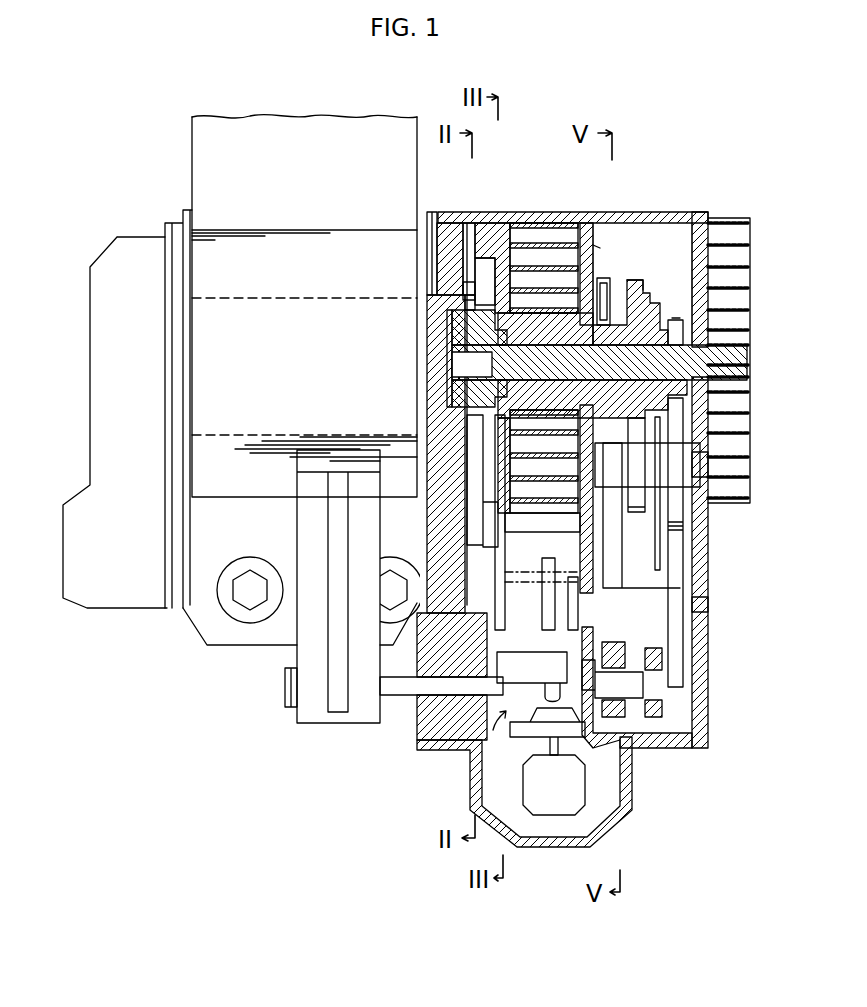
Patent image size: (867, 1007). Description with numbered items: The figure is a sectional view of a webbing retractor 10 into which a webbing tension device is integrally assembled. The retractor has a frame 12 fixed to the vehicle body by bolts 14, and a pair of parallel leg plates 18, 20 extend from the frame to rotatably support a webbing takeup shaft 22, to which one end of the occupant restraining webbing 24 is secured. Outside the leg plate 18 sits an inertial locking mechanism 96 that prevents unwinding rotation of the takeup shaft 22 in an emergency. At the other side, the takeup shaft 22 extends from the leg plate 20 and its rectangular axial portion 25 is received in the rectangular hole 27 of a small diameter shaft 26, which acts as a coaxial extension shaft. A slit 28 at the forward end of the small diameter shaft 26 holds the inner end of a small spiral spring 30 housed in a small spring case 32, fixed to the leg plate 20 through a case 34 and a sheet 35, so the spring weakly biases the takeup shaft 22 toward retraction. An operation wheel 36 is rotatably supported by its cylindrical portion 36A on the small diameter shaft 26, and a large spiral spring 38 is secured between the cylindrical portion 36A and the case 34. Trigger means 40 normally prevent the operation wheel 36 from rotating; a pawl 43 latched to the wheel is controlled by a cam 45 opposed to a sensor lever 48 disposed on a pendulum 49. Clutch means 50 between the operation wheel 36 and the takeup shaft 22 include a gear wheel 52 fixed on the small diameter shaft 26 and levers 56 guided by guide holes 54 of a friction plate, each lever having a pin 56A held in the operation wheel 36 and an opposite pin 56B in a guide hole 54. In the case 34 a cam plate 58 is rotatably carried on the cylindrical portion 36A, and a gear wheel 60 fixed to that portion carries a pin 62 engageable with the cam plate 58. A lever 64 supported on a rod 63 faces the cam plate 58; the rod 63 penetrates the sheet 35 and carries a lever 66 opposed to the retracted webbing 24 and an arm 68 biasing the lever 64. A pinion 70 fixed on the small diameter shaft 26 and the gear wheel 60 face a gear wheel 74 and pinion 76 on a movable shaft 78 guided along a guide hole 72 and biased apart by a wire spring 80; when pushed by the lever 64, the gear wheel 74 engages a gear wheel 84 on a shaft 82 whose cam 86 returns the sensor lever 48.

The webbing retractor 10 is at (678, 116).
The frame 12 is at (230, 635).
The bolts 14 is at (237, 593).
The leg plate 18 is at (178, 540).
The leg plate 20 is at (430, 527).
The webbing takeup shaft 22 is at (270, 298).
The occupant restraining webbing 24 is at (325, 137).
The rectangular axial portion 25 is at (460, 352).
The small diameter shaft 26 is at (648, 345).
The rectangular hole 27 is at (460, 383).
The slit 28 is at (735, 357).
The small spiral spring 30 is at (727, 238).
The small spring case 32 is at (752, 287).
The case 34 is at (600, 224).
The sheet 35 is at (447, 212).
The operation wheel 36 is at (492, 230).
The cylindrical portion 36A is at (560, 317).
The large spiral spring 38 is at (540, 250).
The trigger means 40 is at (478, 770).
The pawl 43 is at (488, 552).
The cam 45 is at (505, 540).
The sensor lever 48 is at (553, 665).
The pendulum 49 is at (577, 790).
The clutch means 50 is at (470, 225).
The gear wheel 52 is at (470, 300).
The guide holes 54 is at (462, 275).
The levers 56 is at (470, 280).
The pin 56A is at (495, 270).
The pin 56B is at (468, 290).
The cam plate 58 is at (608, 287).
The gear wheel 60 is at (640, 285).
The pin 62 is at (609, 241).
The rod 63 is at (638, 690).
The lever 64 is at (612, 577).
The lever 66 is at (313, 712).
The arm 68 is at (653, 643).
The pinion 70 is at (677, 320).
The guide hole 72 is at (745, 470).
The gear wheel 74 is at (680, 516).
The pinion 76 is at (636, 513).
The movable shaft 78 is at (735, 447).
The wire spring 80 is at (660, 562).
The shaft 82 is at (708, 603).
The gear wheel 84 is at (680, 637).
The cam 86 is at (560, 572).
The inertial locking mechanism 96 is at (90, 393).